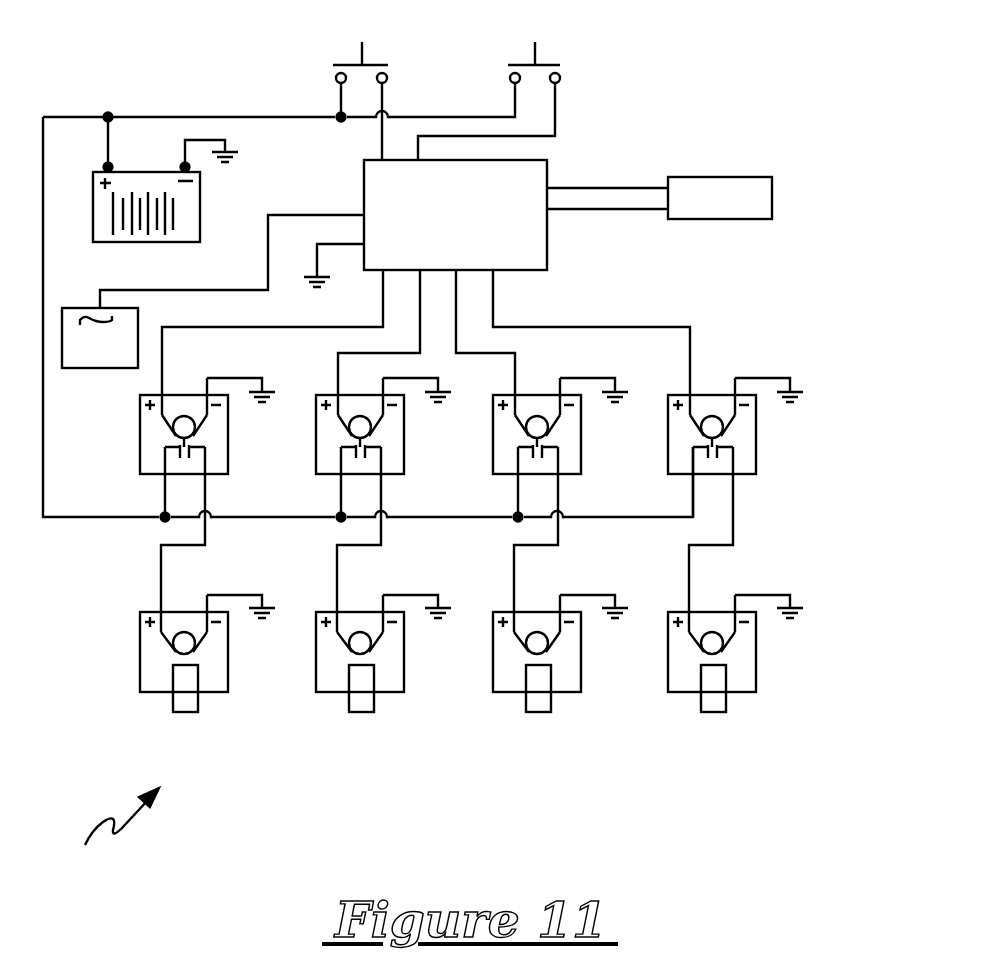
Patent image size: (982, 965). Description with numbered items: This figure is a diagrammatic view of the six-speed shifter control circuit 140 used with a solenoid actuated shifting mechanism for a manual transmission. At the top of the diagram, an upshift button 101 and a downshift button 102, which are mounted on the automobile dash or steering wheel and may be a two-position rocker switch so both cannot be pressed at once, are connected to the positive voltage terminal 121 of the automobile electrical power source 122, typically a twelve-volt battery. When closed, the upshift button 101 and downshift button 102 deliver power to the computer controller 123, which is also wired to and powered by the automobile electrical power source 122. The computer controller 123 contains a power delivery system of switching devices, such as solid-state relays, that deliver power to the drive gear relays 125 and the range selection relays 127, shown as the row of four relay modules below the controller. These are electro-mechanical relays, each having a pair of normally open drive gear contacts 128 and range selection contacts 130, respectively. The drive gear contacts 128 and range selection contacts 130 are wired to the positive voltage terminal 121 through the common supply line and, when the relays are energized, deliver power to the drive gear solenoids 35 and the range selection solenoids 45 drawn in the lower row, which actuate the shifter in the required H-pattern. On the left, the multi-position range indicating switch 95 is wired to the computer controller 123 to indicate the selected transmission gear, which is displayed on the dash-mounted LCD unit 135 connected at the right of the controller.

The upshift button 101 is at (345, 63).
The downshift button 102 is at (518, 63).
The positive voltage terminal 121 is at (113, 165).
The automobile electrical power source 122 is at (200, 207).
The computer controller 123 is at (549, 170).
The LCD unit 135 is at (774, 187).
The multi-position range indicating switch 95 is at (102, 372).
The drive gear relays 125 is at (316, 440).
The drive gear contacts 128 is at (364, 453).
The range selection relays 127 is at (668, 440).
The range selection contacts 130 is at (716, 453).
The drive gear solenoids 35 is at (316, 692).
The range selection solenoids 45 is at (668, 692).
The six-speed shifter control circuit 140 is at (108, 826).